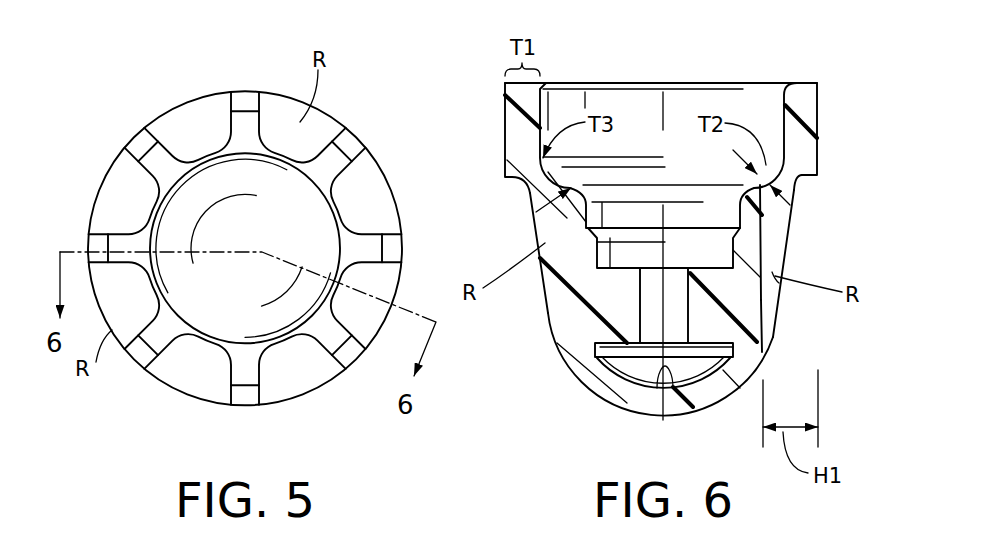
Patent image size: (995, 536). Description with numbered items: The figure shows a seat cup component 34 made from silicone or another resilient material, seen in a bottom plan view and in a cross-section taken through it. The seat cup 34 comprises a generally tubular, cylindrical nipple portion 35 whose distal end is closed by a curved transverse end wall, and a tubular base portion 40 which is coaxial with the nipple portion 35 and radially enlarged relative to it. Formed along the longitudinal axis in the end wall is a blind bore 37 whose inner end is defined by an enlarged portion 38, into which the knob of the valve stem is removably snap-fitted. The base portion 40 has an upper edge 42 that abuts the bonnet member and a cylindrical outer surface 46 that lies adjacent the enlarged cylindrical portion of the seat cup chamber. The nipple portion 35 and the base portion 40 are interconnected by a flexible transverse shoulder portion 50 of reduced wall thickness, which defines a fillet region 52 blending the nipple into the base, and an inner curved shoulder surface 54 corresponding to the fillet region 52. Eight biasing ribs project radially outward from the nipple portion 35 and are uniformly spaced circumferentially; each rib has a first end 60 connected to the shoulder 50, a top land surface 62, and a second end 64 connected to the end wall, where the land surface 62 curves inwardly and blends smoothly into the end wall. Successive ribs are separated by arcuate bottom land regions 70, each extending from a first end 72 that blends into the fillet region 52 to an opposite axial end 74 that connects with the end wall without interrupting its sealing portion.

In FIG. 5, the seat cup component 34 is at (129, 131).
In FIG. 6, the seat cup component 34 is at (593, 403).
In FIG. 5, the nipple portion 35 is at (248, 352).
In FIG. 6, the nipple portion 35 is at (772, 325).
In FIG. 6, the blind bore 37 is at (676, 297).
In FIG. 6, the enlarged portion 38 is at (668, 387).
In FIG. 5, the tubular base portion 40 is at (341, 114).
In FIG. 6, the tubular base portion 40 is at (503, 152).
In FIG. 6, the upper edge 42 is at (723, 80).
In FIG. 6, the cylindrical outer surface 46 is at (818, 128).
In FIG. 5, the transverse shoulder portion 50 is at (190, 376).
In FIG. 6, the transverse shoulder portion 50 is at (793, 205).
In FIG. 6, the fillet region 52 is at (768, 237).
In FIG. 6, the inner curved shoulder surface 54 is at (758, 190).
In FIG. 6, the first end 60 is at (522, 200).
In FIG. 5, the top land surface 62 is at (402, 250).
In FIG. 6, the top land surface 62 is at (542, 303).
In FIG. 6, the second end 64 is at (563, 368).
In FIG. 5, the bottom land regions 70 is at (205, 160).
In FIG. 6, the first end 72 is at (778, 255).
In FIG. 6, the opposite axial end 74 is at (768, 347).